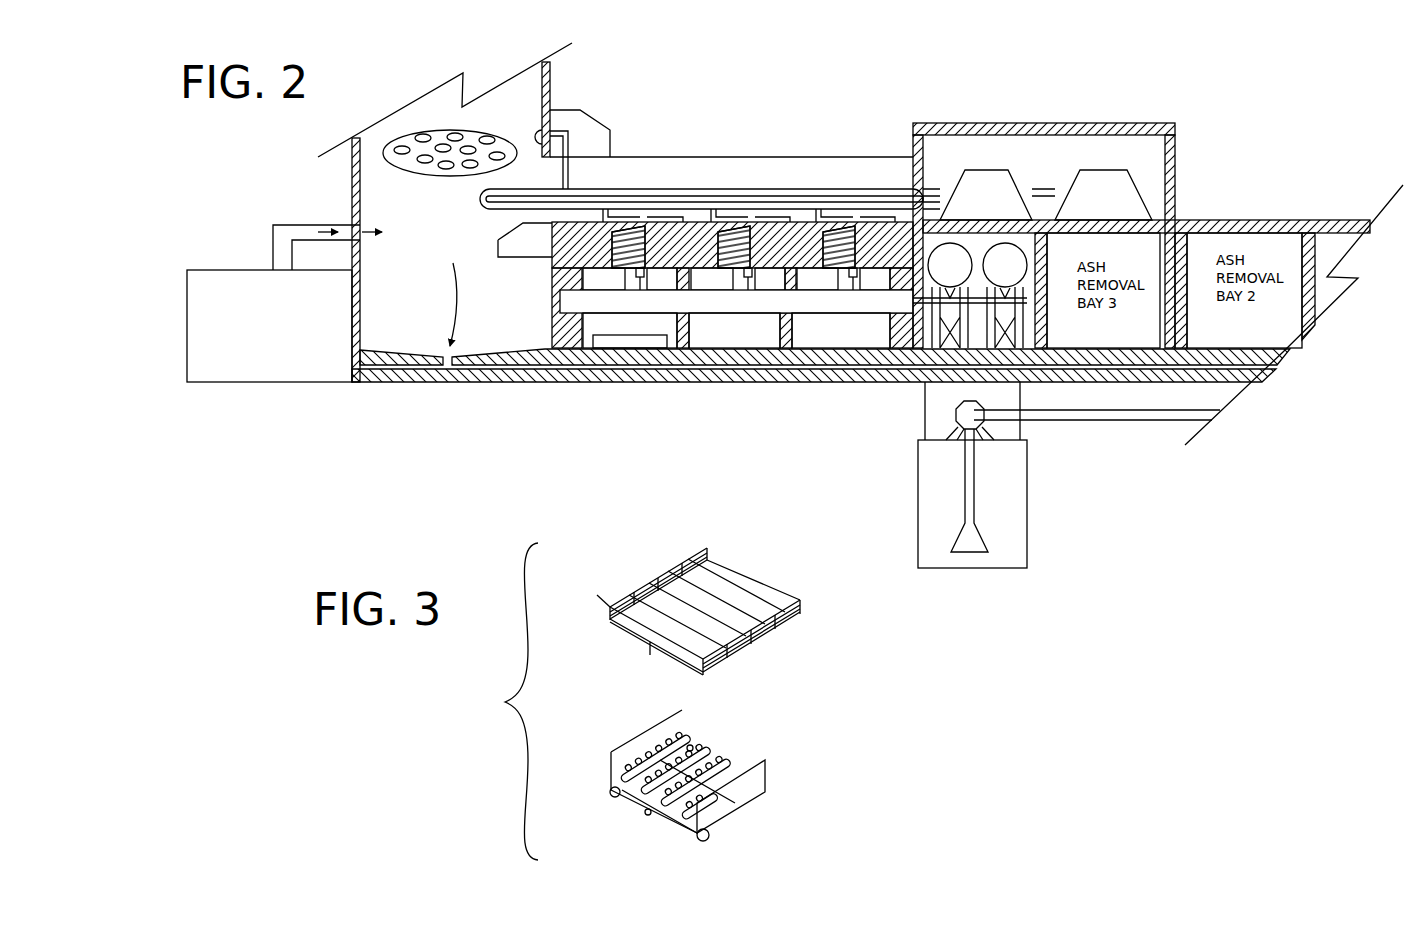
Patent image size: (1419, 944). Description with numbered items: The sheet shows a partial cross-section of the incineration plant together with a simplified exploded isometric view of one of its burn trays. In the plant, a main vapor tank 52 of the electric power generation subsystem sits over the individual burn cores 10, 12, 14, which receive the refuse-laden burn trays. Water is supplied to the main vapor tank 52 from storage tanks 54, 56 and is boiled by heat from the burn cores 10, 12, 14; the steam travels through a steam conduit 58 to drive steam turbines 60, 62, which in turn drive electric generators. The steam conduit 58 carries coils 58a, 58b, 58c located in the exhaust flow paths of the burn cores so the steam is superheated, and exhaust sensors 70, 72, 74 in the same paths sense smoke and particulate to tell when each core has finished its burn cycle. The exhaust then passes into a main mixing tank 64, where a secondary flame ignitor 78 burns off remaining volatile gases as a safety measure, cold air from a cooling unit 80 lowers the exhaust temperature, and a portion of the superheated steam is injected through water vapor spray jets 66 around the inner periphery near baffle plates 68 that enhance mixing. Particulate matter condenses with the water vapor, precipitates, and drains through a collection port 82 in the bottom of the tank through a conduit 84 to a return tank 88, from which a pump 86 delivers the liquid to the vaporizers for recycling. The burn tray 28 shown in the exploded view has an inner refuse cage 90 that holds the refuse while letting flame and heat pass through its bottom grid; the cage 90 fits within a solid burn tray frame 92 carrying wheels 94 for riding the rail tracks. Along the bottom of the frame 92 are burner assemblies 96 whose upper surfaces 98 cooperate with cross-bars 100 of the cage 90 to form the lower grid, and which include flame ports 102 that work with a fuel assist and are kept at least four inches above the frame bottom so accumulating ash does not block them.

In FIG. 2, the burn core 10 is at (627, 325).
In FIG. 2, the burn core 12 is at (730, 325).
In FIG. 2, the burn core 14 is at (833, 325).
In FIG. 3, the burn tray 28 is at (503, 701).
In FIG. 2, the main vapor tank 52 is at (580, 300).
In FIG. 2, the storage tank 54 is at (950, 295).
In FIG. 2, the storage tank 56 is at (1005, 295).
In FIG. 2, the steam conduit 58 is at (683, 189).
In FIG. 2, the steam coil 58a is at (624, 245).
In FIG. 2, the steam coil 58b is at (735, 245).
In FIG. 2, the steam coil 58c is at (838, 245).
In FIG. 2, the steam turbine 60 is at (987, 195).
In FIG. 2, the steam turbine 62 is at (1107, 195).
In FIG. 2, the main mixing tank 64 is at (352, 190).
In FIG. 2, the water vapor spray jets 66 is at (537, 137).
In FIG. 2, the baffle plates 68 is at (428, 150).
In FIG. 2, the exhaust sensor 70 is at (643, 277).
In FIG. 2, the exhaust sensor 72 is at (749, 277).
In FIG. 2, the exhaust sensor 74 is at (854, 277).
In FIG. 2, the secondary flame ignitor 78 is at (516, 250).
In FIG. 2, the cooling unit 80 is at (258, 383).
In FIG. 2, the collection port 82 is at (453, 291).
In FIG. 2, the conduit 84 is at (500, 372).
In FIG. 2, the pump 86 is at (955, 415).
In FIG. 2, the return tank 88 is at (1027, 502).
In FIG. 3, the refuse cage 90 is at (735, 610).
In FIG. 3, the burn tray frame 92 is at (688, 790).
In FIG. 3, the wheels 94 is at (613, 795).
In FIG. 3, the burner assemblies 96 is at (668, 828).
In FIG. 3, the upper surface 98 is at (735, 758).
In FIG. 3, the cross-bars 100 is at (748, 583).
In FIG. 3, the flame ports 102 is at (695, 747).